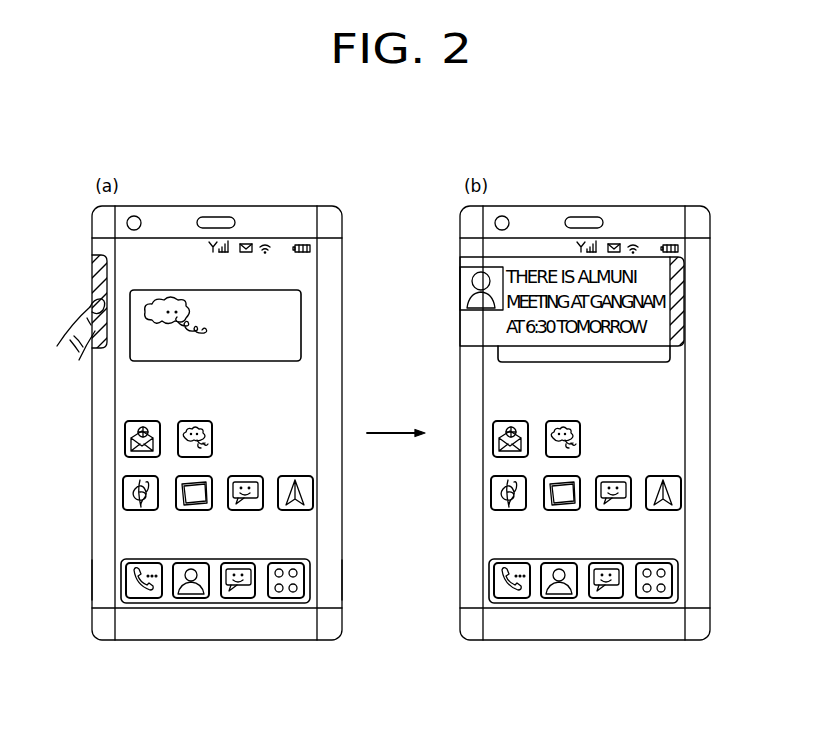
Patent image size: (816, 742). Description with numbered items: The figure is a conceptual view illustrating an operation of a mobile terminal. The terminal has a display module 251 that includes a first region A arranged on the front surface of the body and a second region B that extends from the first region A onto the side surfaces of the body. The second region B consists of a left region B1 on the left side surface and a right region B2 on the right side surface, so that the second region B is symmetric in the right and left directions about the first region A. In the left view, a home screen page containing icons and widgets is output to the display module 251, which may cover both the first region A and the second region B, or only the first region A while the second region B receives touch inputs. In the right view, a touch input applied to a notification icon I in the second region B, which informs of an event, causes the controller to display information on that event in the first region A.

The notification icon I is at (100, 281).
The first region A is at (177, 387).
The display module 251 is at (140, 533).
The left region B1 is at (103, 597).
The right region B2 is at (330, 597).
The second region B is at (217, 646).